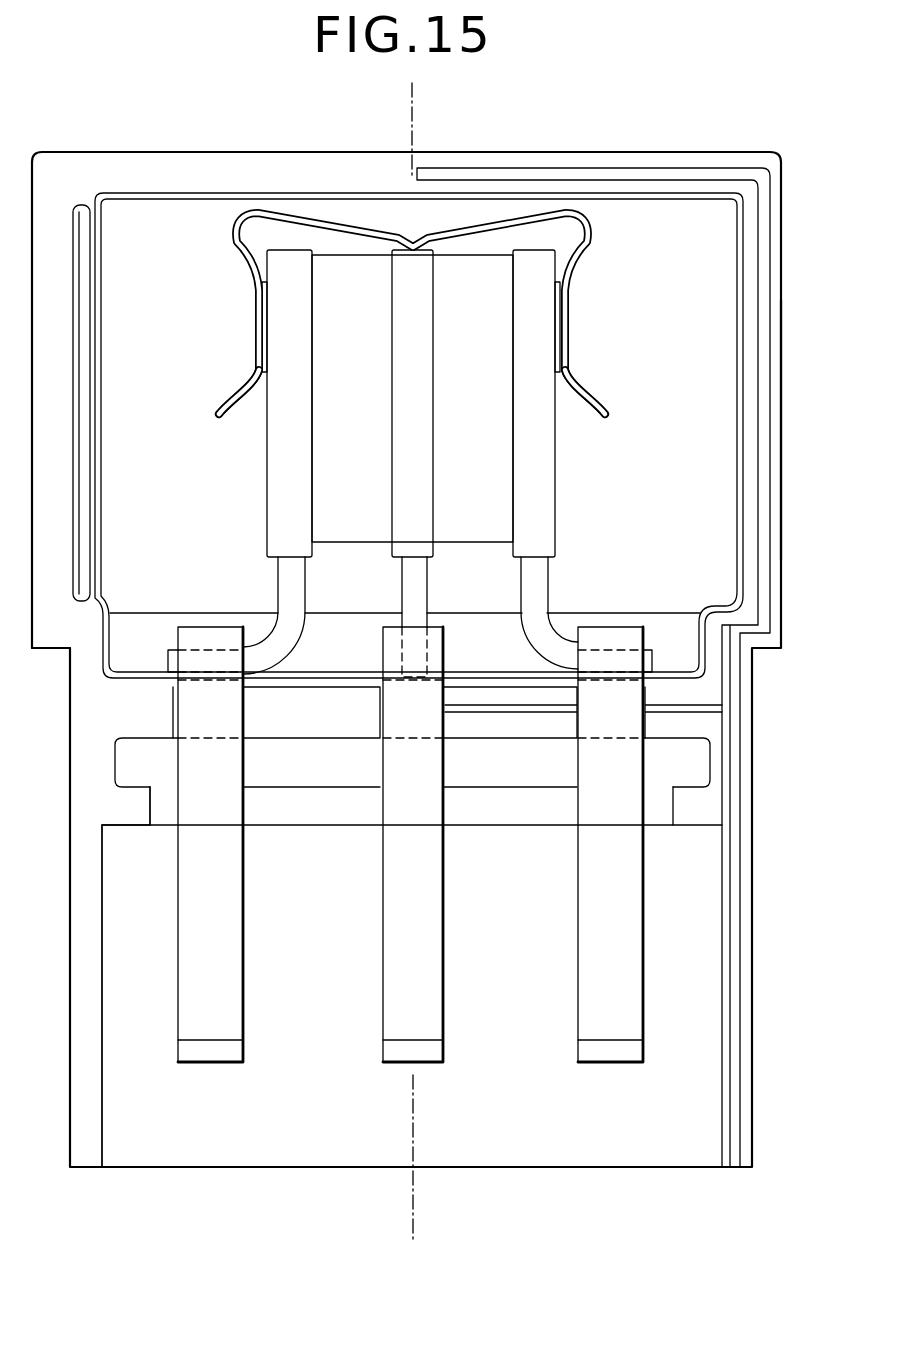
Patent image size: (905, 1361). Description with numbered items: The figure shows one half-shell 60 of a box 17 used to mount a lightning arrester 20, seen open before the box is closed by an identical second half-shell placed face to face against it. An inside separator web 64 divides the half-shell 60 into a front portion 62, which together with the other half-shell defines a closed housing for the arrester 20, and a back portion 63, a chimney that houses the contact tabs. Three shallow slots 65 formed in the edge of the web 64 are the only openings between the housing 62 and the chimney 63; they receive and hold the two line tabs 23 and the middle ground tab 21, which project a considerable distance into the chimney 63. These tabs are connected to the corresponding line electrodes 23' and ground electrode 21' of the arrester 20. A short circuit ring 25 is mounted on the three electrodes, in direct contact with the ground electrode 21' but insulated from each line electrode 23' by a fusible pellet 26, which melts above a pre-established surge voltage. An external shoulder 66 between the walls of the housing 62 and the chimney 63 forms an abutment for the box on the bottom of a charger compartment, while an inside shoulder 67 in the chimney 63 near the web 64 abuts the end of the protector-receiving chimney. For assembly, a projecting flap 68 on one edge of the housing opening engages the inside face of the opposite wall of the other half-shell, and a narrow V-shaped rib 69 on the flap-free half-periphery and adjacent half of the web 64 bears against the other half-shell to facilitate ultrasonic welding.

The box 17 is at (96, 140).
The half-shell 60 is at (160, 152).
The lightning arrester 20 is at (340, 278).
The ground tab 21 is at (429, 872).
The line tab 23 is at (419, 872).
The ground electrode 21' is at (450, 438).
The line electrode 23' is at (419, 462).
The short circuit ring 25 is at (245, 362).
The fusible pellet 26 is at (256, 378).
The front portion 62 is at (700, 340).
The back portion 63 is at (690, 893).
The separator web 64 is at (277, 712).
The slot 65 is at (195, 712).
The external shoulder 66 is at (50, 655).
The inside shoulder 67 is at (132, 808).
The projecting flap 68 is at (85, 528).
The V-shaped rib 69 is at (765, 397).